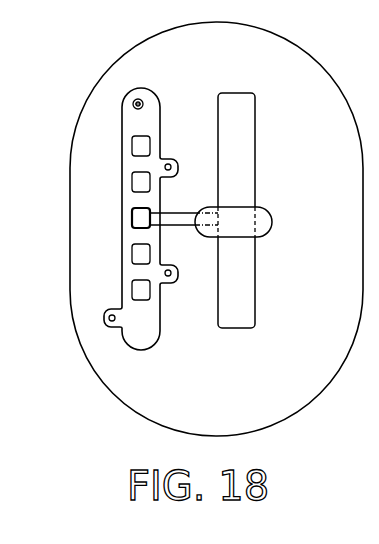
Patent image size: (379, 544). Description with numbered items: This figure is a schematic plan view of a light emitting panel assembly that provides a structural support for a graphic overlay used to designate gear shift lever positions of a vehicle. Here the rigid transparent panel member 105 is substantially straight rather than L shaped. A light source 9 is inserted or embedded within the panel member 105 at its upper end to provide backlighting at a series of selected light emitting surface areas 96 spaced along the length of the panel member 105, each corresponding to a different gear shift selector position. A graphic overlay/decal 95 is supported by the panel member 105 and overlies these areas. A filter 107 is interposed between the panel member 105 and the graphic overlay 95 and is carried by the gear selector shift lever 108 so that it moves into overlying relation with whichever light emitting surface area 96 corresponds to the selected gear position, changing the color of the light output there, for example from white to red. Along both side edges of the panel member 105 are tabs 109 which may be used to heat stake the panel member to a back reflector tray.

The light source 9 is at (138, 98).
The graphic overlay/decal 95 is at (127, 123).
The light emitting surface areas 96 is at (132, 146).
The panel member 105 is at (132, 174).
The filter 107 is at (132, 222).
The gear selector shift lever 108 is at (268, 212).
The tabs 109 is at (178, 163).